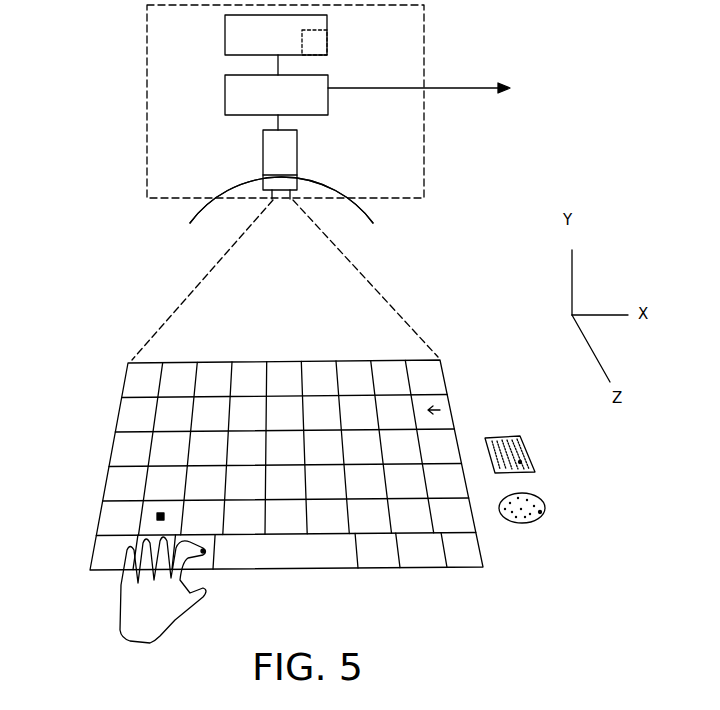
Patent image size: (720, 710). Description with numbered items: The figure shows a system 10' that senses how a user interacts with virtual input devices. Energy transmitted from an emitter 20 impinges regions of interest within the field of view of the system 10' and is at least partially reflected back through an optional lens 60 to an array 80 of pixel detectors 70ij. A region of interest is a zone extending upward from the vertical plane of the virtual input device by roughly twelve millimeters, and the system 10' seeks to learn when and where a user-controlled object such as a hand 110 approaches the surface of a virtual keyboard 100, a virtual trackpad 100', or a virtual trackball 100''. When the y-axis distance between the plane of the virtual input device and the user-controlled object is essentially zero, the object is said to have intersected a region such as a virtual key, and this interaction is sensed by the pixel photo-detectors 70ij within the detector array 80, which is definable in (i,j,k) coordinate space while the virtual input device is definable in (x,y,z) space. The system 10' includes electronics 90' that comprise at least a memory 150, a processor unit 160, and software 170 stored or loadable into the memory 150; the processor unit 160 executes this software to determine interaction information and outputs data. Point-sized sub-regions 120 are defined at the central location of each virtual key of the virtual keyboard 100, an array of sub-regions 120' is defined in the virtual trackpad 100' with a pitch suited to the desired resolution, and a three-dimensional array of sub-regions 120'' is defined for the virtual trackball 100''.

The system 10' is at (229, 101).
The memory 150 is at (224, 22).
The processor unit (CPU) 160 is at (224, 100).
The software 170 is at (317, 30).
The electronics 90' is at (447, 125).
The emitter 20 is at (237, 192).
The detector array 80 is at (345, 191).
The pixel detectors 70ij is at (281, 200).
The lens 60 is at (283, 203).
The virtual keyboard 100 is at (241, 465).
The hand 110 is at (142, 612).
The sub-region 120 is at (207, 565).
The virtual trackpad 100' is at (536, 445).
The sub-regions 120' is at (553, 454).
The virtual trackball 100'' is at (548, 496).
The sub-regions 120'' is at (574, 521).